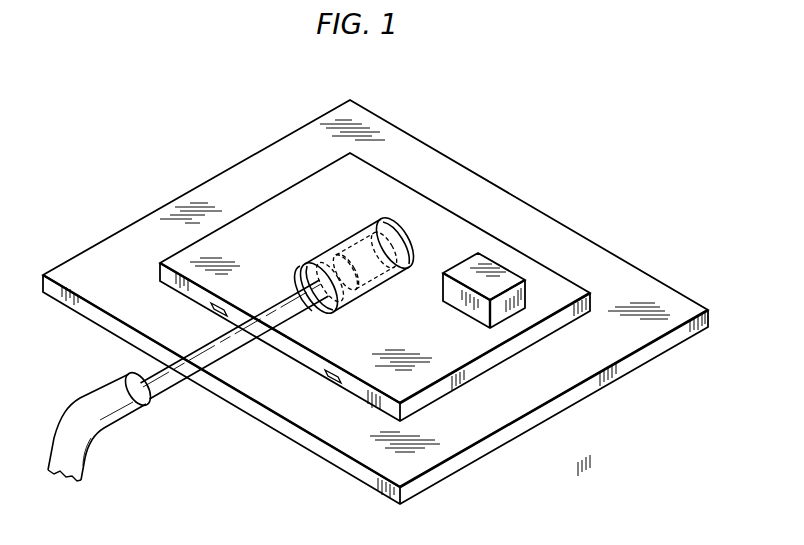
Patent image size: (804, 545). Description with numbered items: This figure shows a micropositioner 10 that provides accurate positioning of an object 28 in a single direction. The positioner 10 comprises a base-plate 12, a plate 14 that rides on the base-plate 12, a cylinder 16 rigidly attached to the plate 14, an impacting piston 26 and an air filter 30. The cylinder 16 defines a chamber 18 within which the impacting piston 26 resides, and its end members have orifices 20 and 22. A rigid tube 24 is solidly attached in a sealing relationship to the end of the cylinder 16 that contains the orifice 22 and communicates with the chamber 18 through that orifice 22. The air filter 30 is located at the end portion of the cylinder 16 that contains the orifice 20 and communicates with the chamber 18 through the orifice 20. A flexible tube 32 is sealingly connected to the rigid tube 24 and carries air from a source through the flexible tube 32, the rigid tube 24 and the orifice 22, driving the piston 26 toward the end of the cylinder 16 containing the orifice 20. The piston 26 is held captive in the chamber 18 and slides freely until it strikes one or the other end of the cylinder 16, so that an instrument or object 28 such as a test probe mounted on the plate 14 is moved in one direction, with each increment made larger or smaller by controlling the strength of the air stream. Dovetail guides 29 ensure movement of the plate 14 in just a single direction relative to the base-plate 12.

The micropositioner 10 is at (180, 113).
The base-plate 12 is at (560, 411).
The plate 14 is at (413, 191).
The cylinder 16 is at (385, 286).
The chamber 18 is at (346, 306).
The orifice 20 is at (369, 222).
The orifice 22 is at (298, 272).
The rigid tube 24 is at (240, 346).
The impacting piston 26 is at (343, 238).
The object 28 is at (508, 280).
The dovetail guides 29 is at (213, 307).
The air filter 30 is at (415, 236).
The flexible tube 32 is at (122, 412).